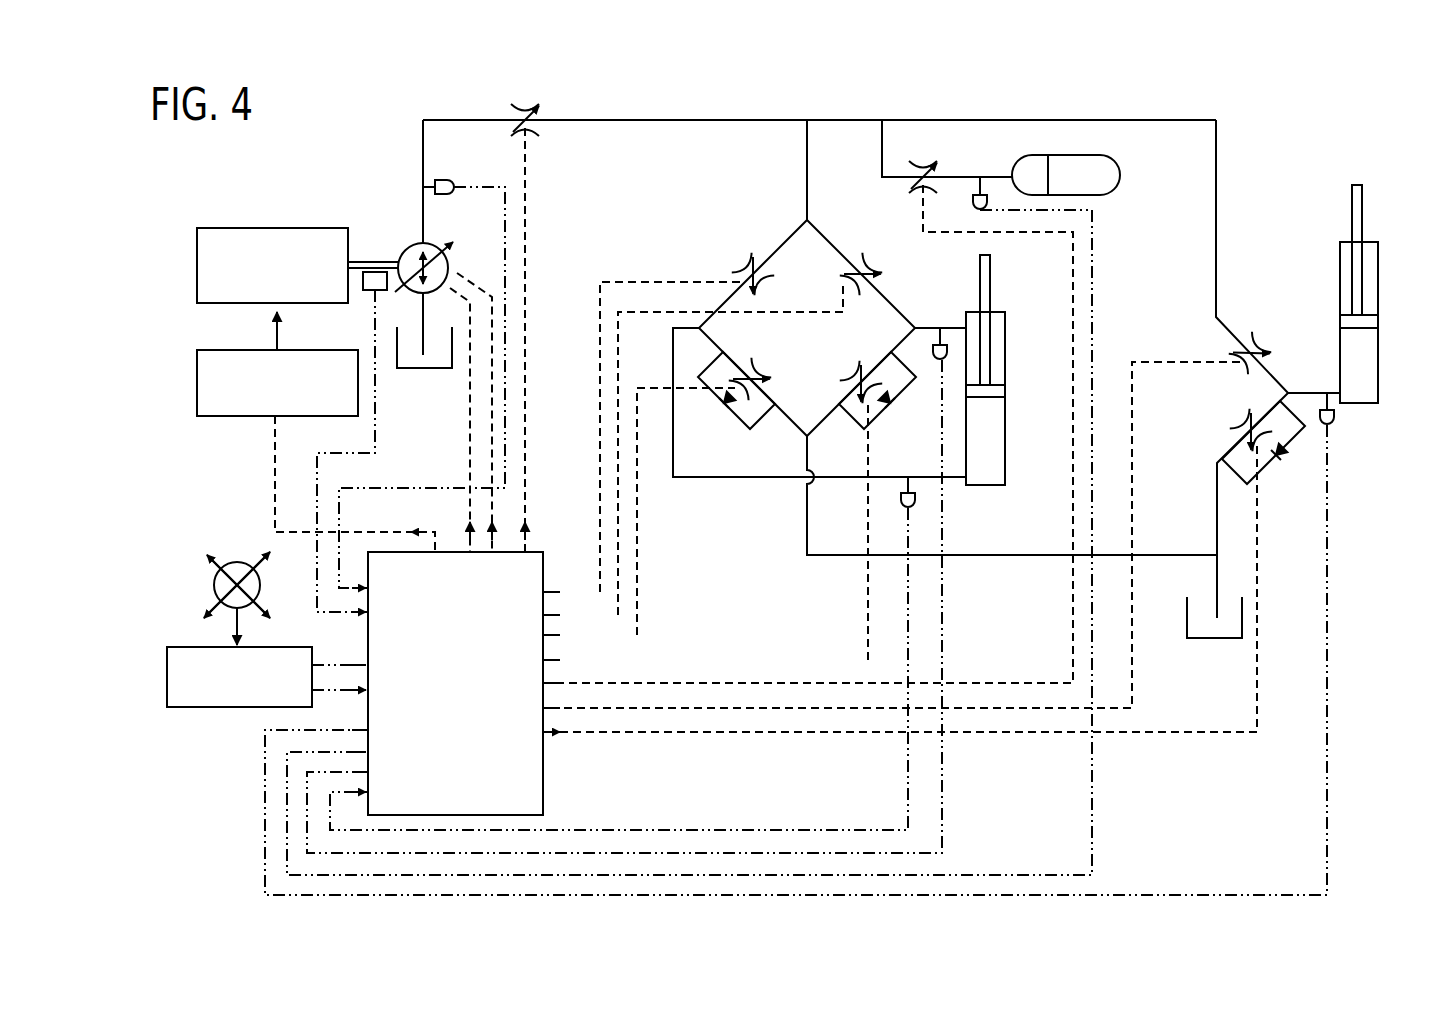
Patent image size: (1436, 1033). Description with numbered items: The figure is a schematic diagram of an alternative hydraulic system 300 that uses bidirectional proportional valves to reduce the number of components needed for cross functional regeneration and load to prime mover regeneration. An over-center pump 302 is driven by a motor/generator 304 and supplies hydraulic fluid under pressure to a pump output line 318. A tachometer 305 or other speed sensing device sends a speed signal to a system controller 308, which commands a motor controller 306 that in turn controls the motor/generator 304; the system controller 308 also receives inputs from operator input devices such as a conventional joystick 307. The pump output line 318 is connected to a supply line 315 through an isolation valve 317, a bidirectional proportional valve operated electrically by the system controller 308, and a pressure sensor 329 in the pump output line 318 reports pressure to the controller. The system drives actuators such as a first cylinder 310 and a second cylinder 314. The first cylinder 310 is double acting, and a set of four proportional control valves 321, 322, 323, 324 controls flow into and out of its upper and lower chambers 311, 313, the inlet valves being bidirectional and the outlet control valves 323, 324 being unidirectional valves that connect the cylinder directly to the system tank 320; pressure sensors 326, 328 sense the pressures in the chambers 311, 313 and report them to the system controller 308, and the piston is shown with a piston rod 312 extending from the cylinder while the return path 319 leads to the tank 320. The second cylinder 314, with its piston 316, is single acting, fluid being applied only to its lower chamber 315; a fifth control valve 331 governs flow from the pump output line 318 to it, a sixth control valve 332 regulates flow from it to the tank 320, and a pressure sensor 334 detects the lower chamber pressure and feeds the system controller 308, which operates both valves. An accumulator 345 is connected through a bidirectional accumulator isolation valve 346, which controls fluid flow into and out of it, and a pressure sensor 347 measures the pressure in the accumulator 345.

The hydraulic system 300 is at (386, 176).
The over-center pump 302 is at (405, 248).
The motor/generator 304 is at (275, 228).
The tachometer 305 is at (368, 292).
The motor controller 306 is at (197, 384).
The joystick 307 is at (244, 562).
The system controller 308 is at (476, 742).
The first cylinder 310 is at (1000, 490).
The upper chamber 311 is at (993, 322).
The piston 312 is at (1003, 392).
The lower chamber 313 is at (1003, 448).
The second cylinder 314 is at (1335, 262).
The supply line 315 is at (672, 120).
The piston 316 is at (1342, 320).
The isolation valve 317 is at (529, 110).
The pump output line 318 is at (470, 118).
The return line 319 is at (1218, 585).
The system tank 320 is at (425, 370).
The inlet control valve 321 is at (760, 262).
The proportional control valve 322 is at (858, 262).
The outlet control valve 323 is at (768, 410).
The outlet control valve 324 is at (840, 410).
The pressure sensor 326 is at (932, 347).
The pressure sensor 328 is at (900, 500).
The pressure sensor 329 is at (450, 182).
The fifth control valve 331 is at (1248, 335).
The sixth control valve 332 is at (1236, 430).
The pressure sensor 334 is at (1332, 426).
The accumulator 345 is at (1098, 156).
The accumulator isolation valve 346 is at (912, 182).
The pressure sensor 347 is at (972, 200).